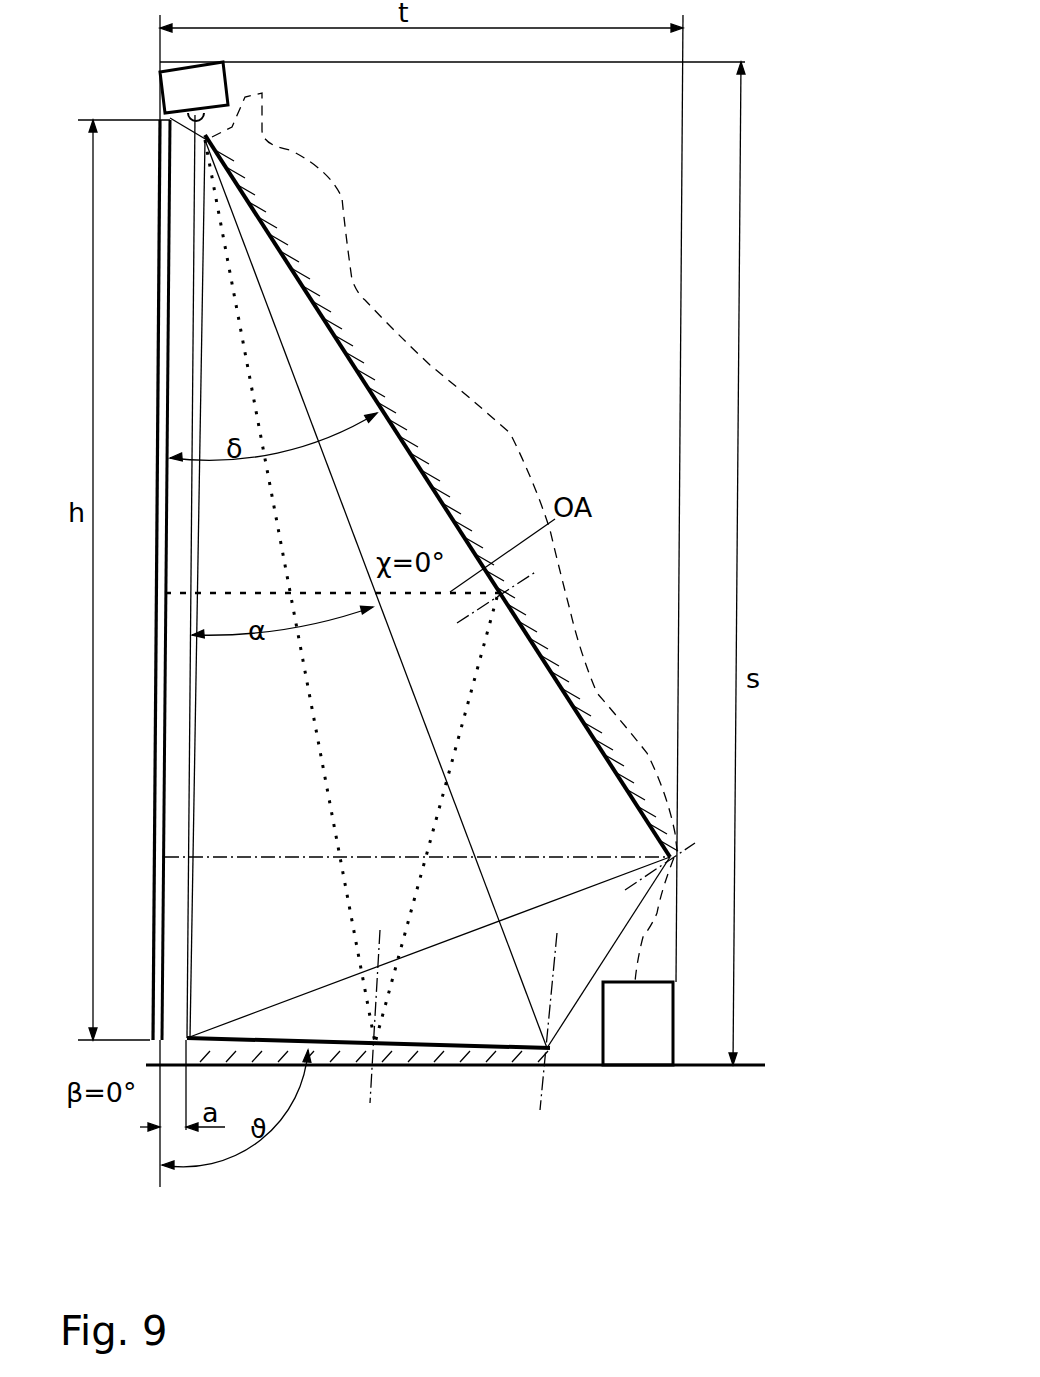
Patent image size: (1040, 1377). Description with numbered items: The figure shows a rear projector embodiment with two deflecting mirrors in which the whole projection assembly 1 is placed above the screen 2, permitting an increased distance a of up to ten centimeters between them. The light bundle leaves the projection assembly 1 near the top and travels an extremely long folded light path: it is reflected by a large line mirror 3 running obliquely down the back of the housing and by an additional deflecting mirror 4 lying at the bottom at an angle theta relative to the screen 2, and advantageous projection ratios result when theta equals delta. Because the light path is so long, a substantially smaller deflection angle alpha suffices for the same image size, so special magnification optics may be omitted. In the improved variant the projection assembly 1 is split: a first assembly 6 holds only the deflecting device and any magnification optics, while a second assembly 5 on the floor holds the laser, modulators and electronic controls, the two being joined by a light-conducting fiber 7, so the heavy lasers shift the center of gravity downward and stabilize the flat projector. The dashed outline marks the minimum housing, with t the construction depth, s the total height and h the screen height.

The projection assembly 1 is at (227, 82).
The first assembly 6 is at (227, 82).
The screen 2 is at (153, 692).
The upper deflection mirror 3 is at (408, 440).
The deflecting mirror 4 is at (405, 1050).
The second assembly 5 is at (675, 1000).
The light-conducting fiber 7 is at (345, 200).